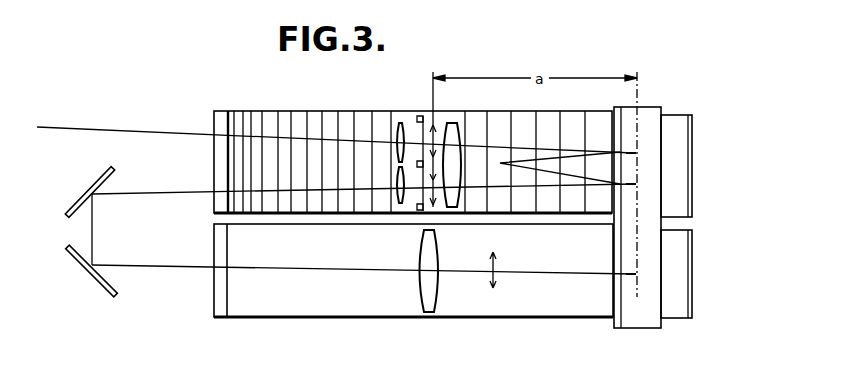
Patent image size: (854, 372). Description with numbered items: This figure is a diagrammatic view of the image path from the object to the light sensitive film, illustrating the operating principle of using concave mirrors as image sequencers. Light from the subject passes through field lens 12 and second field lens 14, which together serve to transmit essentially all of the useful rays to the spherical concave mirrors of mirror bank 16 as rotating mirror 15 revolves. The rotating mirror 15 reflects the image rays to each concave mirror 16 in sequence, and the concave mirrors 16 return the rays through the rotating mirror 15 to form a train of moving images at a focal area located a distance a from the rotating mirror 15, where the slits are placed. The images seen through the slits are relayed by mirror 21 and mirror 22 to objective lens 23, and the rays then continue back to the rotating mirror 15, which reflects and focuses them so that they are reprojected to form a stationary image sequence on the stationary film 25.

The field lens 12 is at (400, 121).
The second field lens 14 is at (451, 147).
The rotating mirror 15 is at (653, 232).
The mirror bank of concave mirrors 16 is at (291, 109).
The mirror 21 is at (84, 197).
The mirror 22 is at (81, 263).
The objective lens 23 is at (428, 309).
The film 25 is at (333, 311).